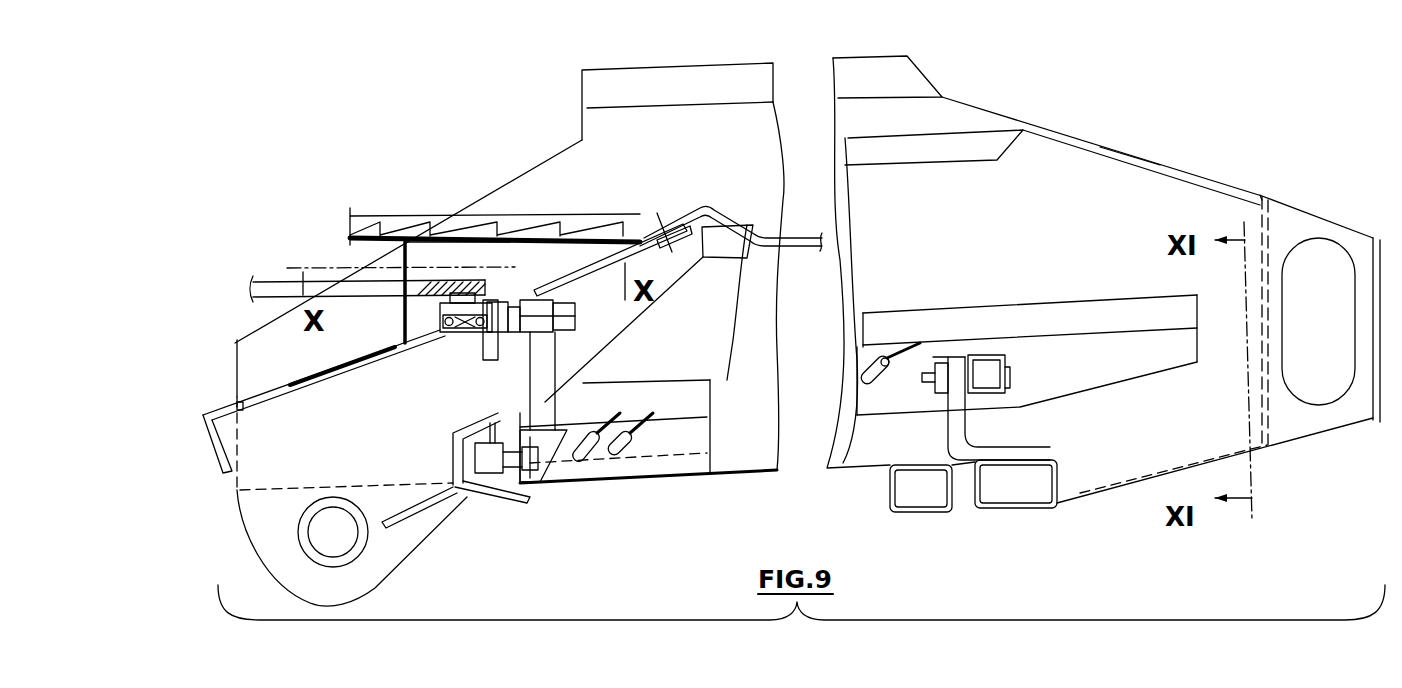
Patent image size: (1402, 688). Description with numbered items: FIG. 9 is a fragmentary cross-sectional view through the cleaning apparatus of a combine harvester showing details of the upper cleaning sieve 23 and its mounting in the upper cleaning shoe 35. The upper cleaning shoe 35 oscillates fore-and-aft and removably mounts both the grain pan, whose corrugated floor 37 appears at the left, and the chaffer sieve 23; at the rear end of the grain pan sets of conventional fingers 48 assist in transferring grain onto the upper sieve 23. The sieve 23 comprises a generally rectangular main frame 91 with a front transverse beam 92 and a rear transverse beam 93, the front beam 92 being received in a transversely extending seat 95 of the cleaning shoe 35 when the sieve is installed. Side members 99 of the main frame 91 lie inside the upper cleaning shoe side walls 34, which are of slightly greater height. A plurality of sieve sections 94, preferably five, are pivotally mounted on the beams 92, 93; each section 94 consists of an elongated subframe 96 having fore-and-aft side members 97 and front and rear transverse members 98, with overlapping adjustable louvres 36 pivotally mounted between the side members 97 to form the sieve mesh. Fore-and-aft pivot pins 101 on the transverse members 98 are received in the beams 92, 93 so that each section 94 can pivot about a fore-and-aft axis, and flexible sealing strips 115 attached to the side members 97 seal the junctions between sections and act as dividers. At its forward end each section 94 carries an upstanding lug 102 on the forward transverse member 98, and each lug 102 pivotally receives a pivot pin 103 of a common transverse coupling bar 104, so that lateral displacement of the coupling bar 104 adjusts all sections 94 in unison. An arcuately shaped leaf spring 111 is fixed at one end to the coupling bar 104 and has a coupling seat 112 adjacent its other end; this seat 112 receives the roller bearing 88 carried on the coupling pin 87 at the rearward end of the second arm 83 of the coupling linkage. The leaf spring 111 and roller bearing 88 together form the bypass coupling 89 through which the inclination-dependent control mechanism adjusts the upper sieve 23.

The upper cleaning sieve 23 is at (967, 118).
The upper cleaning shoe side walls 34 is at (957, 100).
The upper cleaning shoe 35 is at (1058, 130).
The louvres 36 is at (651, 416).
The corrugated floor 37 is at (597, 226).
The fingers 48 is at (795, 237).
The second arm 83 is at (275, 288).
The coupling pin 87 is at (465, 333).
The roller bearing 88 is at (446, 333).
The bypass coupling 89 is at (462, 262).
The main frame 91 is at (1100, 147).
The front transverse beam 92 is at (499, 428).
The rear transverse beam 93 is at (1058, 488).
The sieve sections 94 is at (667, 370).
The seat 95 is at (453, 455).
The subframe 96 is at (667, 483).
The fore-and-aft side members 97 is at (712, 440).
The front and rear transverse members 98 is at (552, 468).
The side members 99 is at (1212, 187).
The pivot pins 101 is at (507, 490).
The upstanding lug 102 is at (552, 388).
The pivot pin 103 is at (543, 295).
The coupling bar 104 is at (567, 296).
The leaf spring 111 is at (497, 303).
The coupling seat 112 is at (492, 334).
The flexible strips 115 is at (712, 380).